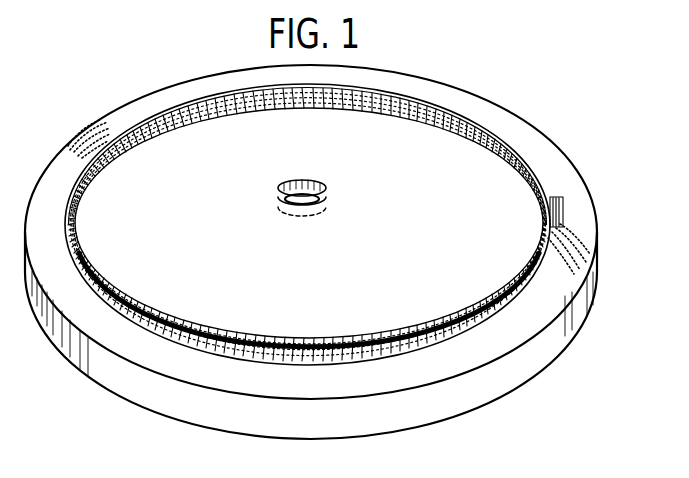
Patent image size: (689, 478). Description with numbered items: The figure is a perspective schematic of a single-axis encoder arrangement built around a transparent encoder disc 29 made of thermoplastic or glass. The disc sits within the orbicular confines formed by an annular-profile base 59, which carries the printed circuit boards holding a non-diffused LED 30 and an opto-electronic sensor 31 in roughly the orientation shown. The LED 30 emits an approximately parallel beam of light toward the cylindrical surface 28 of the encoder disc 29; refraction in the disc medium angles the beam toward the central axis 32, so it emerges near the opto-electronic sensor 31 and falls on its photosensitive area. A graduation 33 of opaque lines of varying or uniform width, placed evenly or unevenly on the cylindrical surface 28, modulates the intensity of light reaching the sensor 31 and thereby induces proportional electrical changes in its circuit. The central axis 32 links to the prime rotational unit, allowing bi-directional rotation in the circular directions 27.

The circular directions 27 is at (184, 154).
The cylindrical surface 28 is at (197, 342).
The encoder disc 29 is at (414, 246).
The non-diffused LED 30 is at (105, 130).
The opto-electronic sensor 31 is at (567, 200).
The central axis 32 is at (306, 162).
The graduation 33 is at (230, 330).
The annular-profile base 59 is at (60, 219).